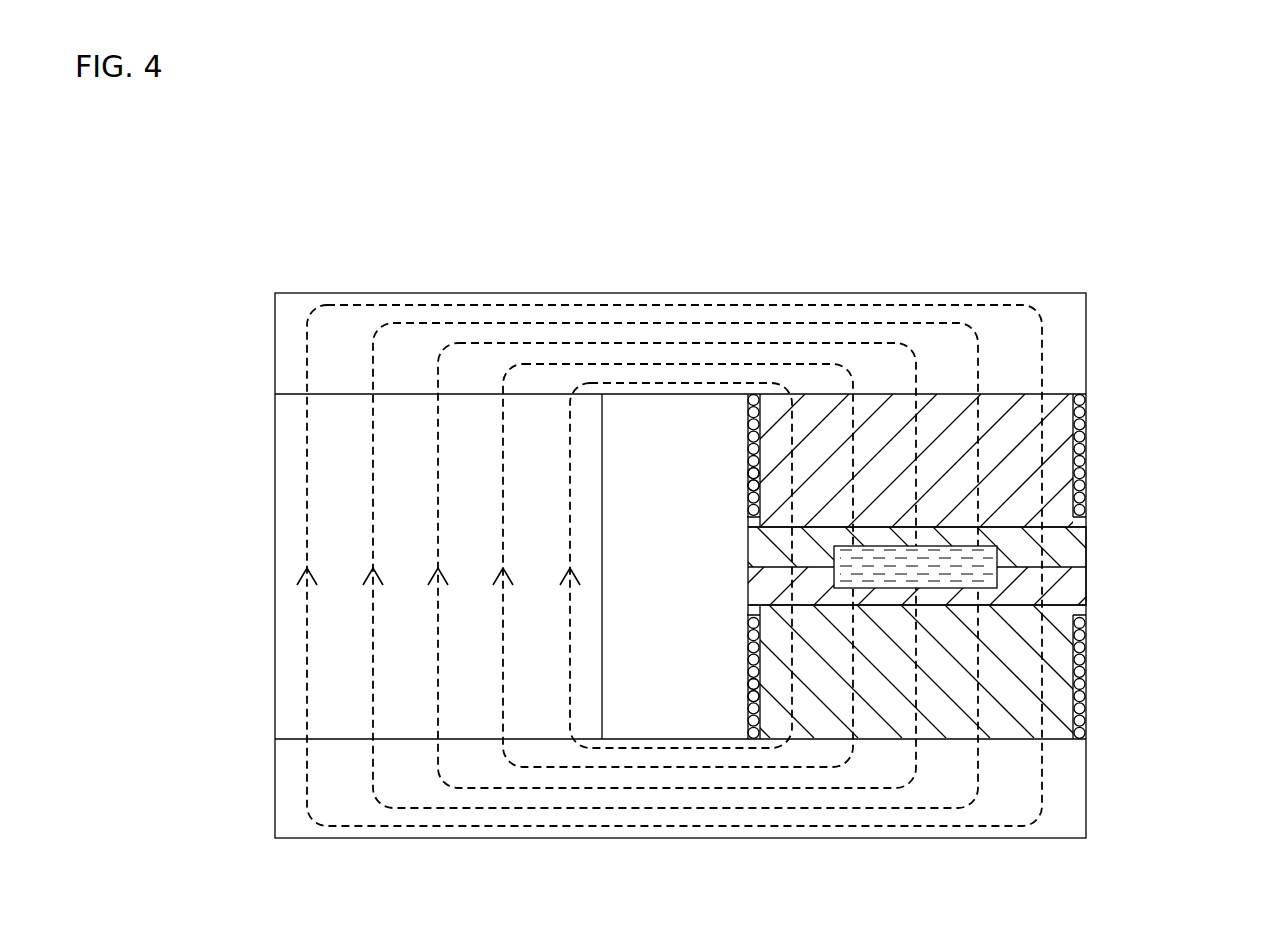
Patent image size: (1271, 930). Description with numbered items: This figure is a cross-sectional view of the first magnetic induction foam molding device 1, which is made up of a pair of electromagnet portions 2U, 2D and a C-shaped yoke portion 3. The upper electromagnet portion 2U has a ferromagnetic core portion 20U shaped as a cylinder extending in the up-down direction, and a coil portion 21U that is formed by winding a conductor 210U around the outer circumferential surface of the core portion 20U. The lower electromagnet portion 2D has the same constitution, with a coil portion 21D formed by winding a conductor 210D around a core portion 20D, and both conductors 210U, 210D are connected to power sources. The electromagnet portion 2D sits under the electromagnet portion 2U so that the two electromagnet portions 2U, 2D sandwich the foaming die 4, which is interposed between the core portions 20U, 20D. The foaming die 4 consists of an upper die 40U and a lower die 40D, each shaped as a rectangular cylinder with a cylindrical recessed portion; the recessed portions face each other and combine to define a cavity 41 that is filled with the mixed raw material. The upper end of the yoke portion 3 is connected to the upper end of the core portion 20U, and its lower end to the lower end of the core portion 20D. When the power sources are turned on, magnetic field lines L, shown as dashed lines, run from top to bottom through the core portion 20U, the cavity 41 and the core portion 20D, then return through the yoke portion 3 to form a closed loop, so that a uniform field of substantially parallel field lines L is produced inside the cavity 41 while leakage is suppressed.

The first magnetic induction foam molding device 1 is at (962, 218).
The yoke portion 3 is at (400, 248).
The foaming die 4 is at (932, 488).
The magnetic field lines L is at (307, 502).
The electromagnet portion 2U is at (933, 448).
The electromagnet portion 2D is at (929, 672).
The core portion 20U is at (1055, 483).
The core portion 20D is at (1057, 666).
The coil portion 21U is at (757, 438).
The coil portion 21D is at (757, 635).
The conductor 210U is at (757, 476).
The conductor 210D is at (757, 682).
The upper die 40U is at (765, 552).
The lower die 40D is at (765, 590).
The cavity 41 is at (932, 548).